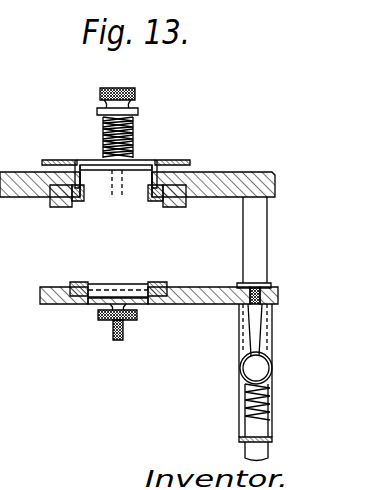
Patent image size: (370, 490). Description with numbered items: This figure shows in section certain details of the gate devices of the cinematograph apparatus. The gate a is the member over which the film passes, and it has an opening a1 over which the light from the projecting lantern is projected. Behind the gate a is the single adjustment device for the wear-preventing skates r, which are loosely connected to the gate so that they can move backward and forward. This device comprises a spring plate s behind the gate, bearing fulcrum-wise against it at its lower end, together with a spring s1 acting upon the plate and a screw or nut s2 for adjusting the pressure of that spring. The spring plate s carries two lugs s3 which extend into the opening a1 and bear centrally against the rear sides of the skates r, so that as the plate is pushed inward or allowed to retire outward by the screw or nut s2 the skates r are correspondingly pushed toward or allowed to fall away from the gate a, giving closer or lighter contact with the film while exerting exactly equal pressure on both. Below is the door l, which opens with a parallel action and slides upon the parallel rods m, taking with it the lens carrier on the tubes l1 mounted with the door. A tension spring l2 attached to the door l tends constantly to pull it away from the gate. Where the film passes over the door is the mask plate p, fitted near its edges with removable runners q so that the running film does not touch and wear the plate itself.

The gate a is at (28, 171).
The opening in gate a1 is at (132, 180).
The spring plate s is at (171, 164).
The spring s1 is at (108, 138).
The screw or nut s2 is at (112, 105).
The lugs s3 is at (155, 187).
The skates r is at (76, 207).
The parallel rods m is at (247, 243).
The door l is at (186, 305).
The tubes l1 is at (242, 433).
The tension spring l2 is at (247, 402).
The mask plate p is at (112, 290).
The runners q is at (80, 282).